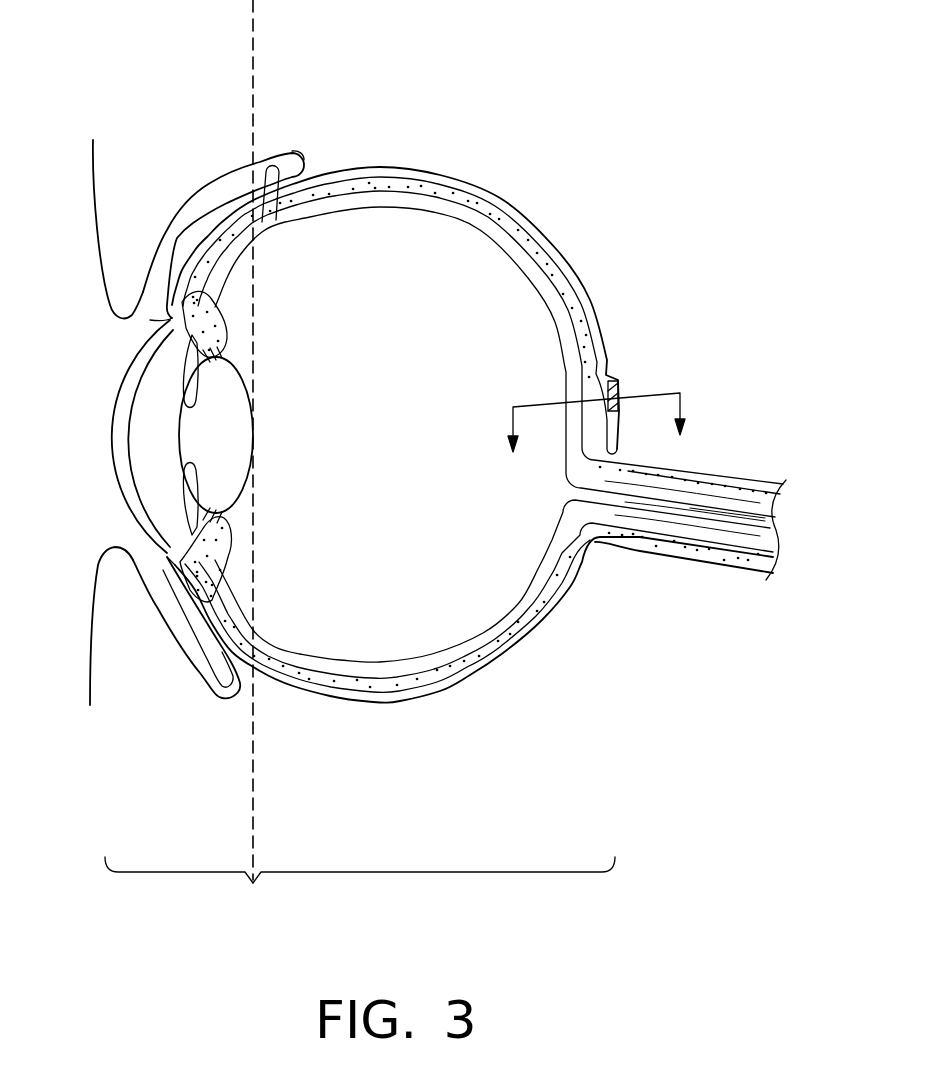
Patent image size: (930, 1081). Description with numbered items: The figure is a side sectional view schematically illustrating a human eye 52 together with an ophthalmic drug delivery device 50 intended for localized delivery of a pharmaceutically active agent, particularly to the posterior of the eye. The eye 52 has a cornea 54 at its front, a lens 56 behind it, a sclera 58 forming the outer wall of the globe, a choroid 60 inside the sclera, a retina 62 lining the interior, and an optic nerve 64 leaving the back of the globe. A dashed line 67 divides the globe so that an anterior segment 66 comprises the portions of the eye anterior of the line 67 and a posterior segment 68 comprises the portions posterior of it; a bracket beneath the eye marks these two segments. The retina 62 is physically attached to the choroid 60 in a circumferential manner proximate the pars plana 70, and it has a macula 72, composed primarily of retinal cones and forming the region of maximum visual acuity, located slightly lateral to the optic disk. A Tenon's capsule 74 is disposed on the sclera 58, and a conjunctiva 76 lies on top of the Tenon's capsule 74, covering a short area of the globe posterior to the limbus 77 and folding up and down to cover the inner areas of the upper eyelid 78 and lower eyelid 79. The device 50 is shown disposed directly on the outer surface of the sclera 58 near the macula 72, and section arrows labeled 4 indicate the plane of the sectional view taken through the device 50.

The section line 4- 4 is at (592, 417).
The ophthalmic drug delivery device 50 is at (620, 393).
The human eye 52 is at (419, 407).
The cornea 54 is at (117, 435).
The lens 56 is at (197, 433).
The sclera 58 is at (305, 160).
The choroid 60 is at (300, 660).
The retina 62 is at (437, 660).
The optic nerve 64 is at (736, 478).
The anterior segment 66 is at (179, 882).
The line 67 is at (258, 28).
The posterior segment 68 is at (434, 882).
The pars plana 70 is at (273, 166).
The macula 72 is at (583, 392).
The Tenon's capsule 74 is at (557, 252).
The conjunctiva 76 is at (196, 210).
The limbus 77 is at (167, 320).
The upper eyelid 78 is at (113, 229).
The lower eyelid 79 is at (107, 626).